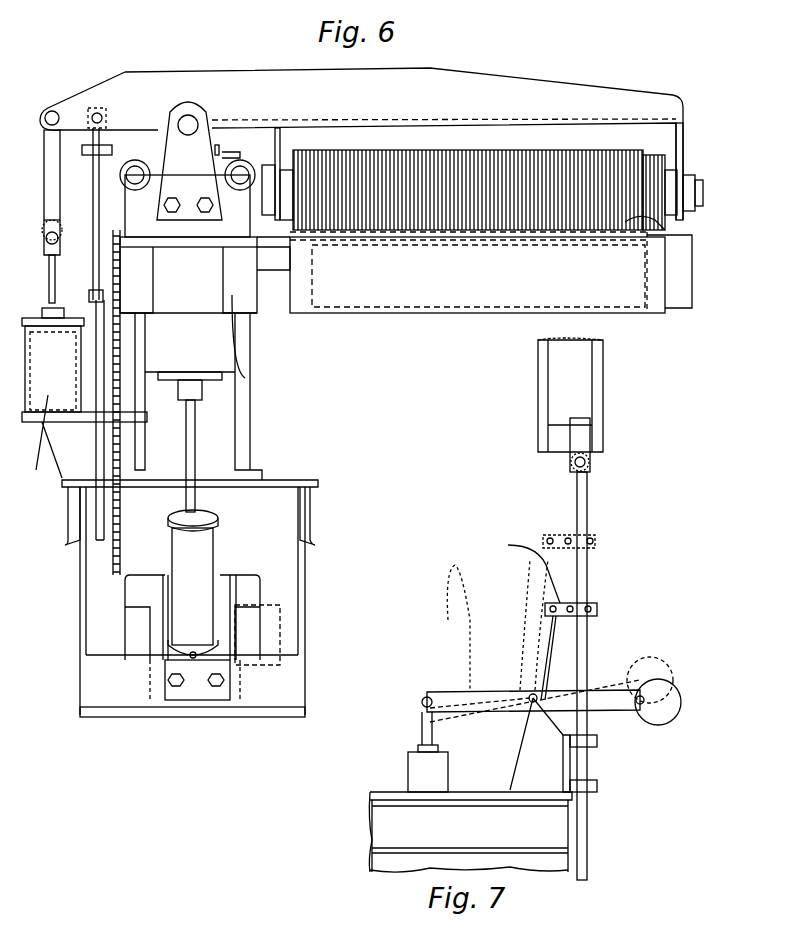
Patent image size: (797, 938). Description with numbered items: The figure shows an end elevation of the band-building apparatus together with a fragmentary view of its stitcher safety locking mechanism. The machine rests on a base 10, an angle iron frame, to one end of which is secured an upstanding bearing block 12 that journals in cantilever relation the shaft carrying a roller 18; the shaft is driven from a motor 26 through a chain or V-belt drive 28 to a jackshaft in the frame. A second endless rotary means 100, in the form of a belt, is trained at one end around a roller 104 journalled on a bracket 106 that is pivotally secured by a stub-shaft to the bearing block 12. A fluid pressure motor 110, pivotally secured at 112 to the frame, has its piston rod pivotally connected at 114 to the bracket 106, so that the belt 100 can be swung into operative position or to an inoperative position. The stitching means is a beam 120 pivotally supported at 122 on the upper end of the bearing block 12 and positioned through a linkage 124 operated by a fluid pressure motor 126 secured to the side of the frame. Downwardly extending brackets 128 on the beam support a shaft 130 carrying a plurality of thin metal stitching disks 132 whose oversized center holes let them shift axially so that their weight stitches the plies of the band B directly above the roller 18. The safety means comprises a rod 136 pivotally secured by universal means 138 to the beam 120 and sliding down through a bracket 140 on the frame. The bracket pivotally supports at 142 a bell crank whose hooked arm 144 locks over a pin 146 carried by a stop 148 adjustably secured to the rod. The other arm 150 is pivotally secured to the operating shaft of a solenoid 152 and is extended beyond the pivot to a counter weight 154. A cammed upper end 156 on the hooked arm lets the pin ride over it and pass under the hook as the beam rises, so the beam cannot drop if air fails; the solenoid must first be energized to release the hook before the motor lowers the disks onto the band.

In FIG. 6, the base 10 is at (314, 602).
In FIG. 7, the base 10 is at (395, 840).
In FIG. 6, the upstanding bearing block 12 is at (233, 430).
In FIG. 6, the roller 18 is at (685, 245).
In FIG. 6, the motor 26 is at (155, 640).
In FIG. 6, the chain or V-belt drive 28 is at (120, 575).
In FIG. 6, the second endless rotary means 100 is at (382, 318).
In FIG. 6, the roller 104 is at (275, 300).
In FIG. 6, the bracket 106 is at (236, 405).
In FIG. 6, the fluid pressure motor 110 is at (200, 555).
In FIG. 6, the pivotal connection 112 is at (175, 670).
In FIG. 6, the pivotal connection 114 is at (172, 400).
In FIG. 6, the beam 120 is at (455, 85).
In FIG. 7, the beam 120 is at (603, 400).
In FIG. 6, the pivot 122 is at (188, 122).
In FIG. 6, the linkage 124 is at (48, 160).
In FIG. 6, the fluid pressure motor 126 is at (48, 395).
In FIG. 6, the downwardly extending brackets 128 is at (283, 152).
In FIG. 6, the shaft 130 is at (703, 190).
In FIG. 6, the stitching disks 132 is at (572, 150).
In FIG. 7, the rod 136 is at (587, 580).
In FIG. 7, the universal means 138 is at (585, 462).
In FIG. 7, the bracket 140 is at (600, 760).
In FIG. 7, the pivot 142 is at (533, 700).
In FIG. 7, the hooked arm 144 is at (530, 635).
In FIG. 7, the pin 146 is at (545, 640).
In FIG. 7, the stop 148 is at (598, 606).
In FIG. 7, the arm 150 is at (448, 695).
In FIG. 7, the solenoid 152 is at (420, 762).
In FIG. 7, the counter weight 154 is at (660, 685).
In FIG. 7, the cammed upper end 156 is at (540, 560).
In FIG. 6, the band B is at (680, 226).